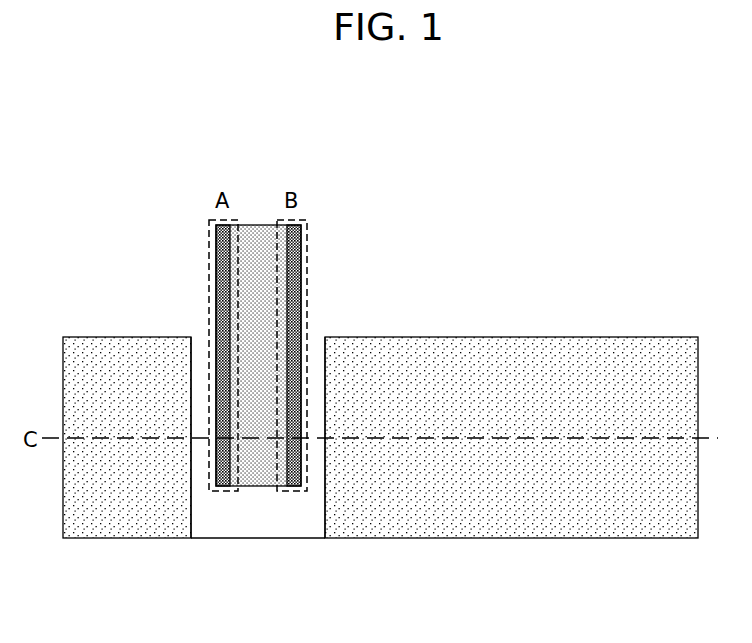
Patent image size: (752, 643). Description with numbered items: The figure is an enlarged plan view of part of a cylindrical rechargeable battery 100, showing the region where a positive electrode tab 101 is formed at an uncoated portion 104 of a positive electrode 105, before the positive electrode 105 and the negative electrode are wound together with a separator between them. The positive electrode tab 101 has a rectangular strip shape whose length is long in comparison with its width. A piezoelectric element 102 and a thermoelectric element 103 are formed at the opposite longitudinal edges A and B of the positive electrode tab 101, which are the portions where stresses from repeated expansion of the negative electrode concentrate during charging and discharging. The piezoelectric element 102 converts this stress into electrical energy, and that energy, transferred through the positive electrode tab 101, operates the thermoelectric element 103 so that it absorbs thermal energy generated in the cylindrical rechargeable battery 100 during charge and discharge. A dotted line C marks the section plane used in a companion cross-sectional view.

The cylindrical rechargeable battery 100 is at (80, 179).
The positive electrode tab 101 is at (258, 237).
The piezoelectric element 102 is at (217, 281).
The thermoelectric element 103 is at (300, 282).
The uncoated portion 104 is at (260, 523).
The positive electrode 105 is at (522, 347).